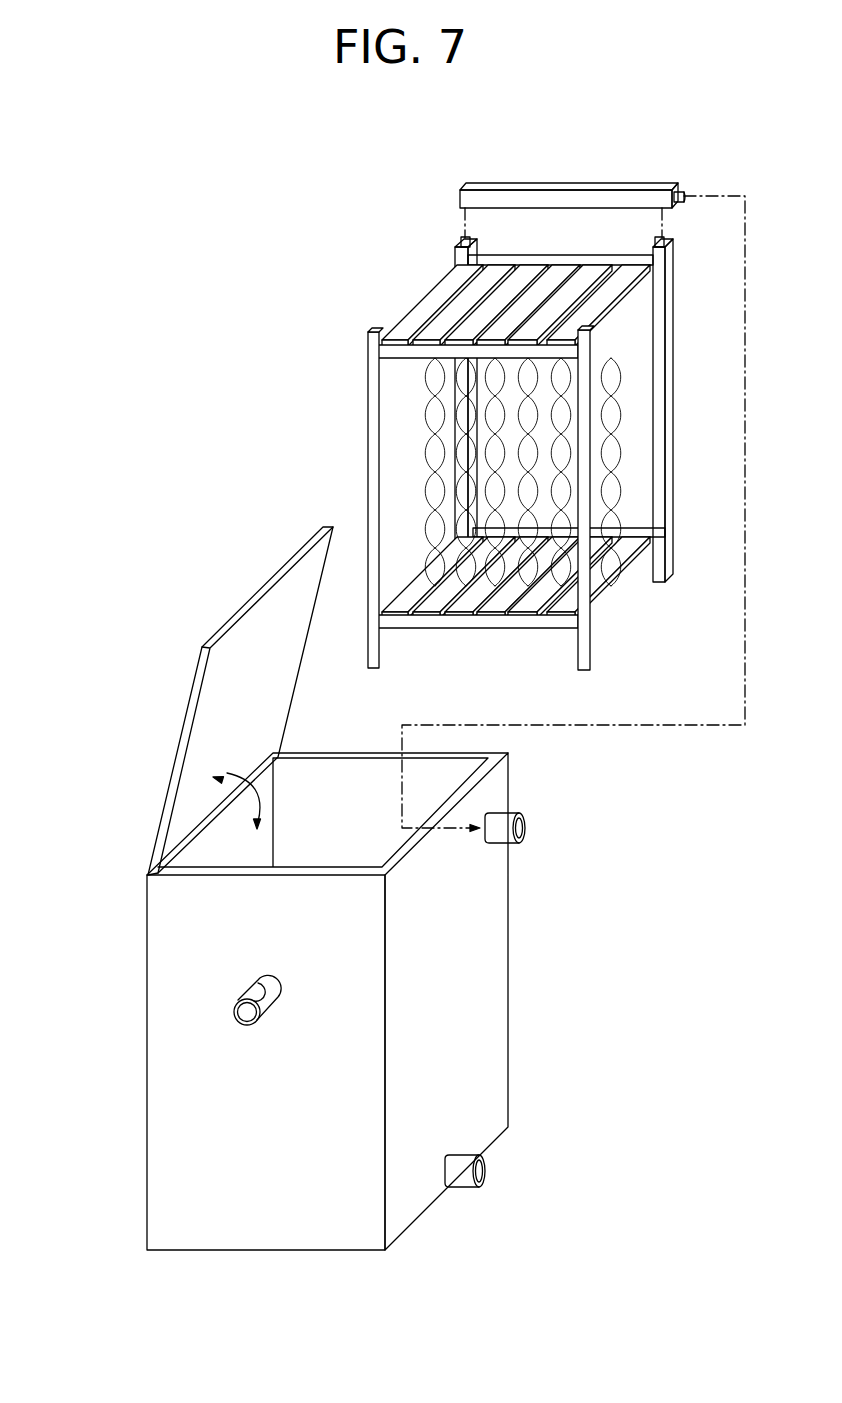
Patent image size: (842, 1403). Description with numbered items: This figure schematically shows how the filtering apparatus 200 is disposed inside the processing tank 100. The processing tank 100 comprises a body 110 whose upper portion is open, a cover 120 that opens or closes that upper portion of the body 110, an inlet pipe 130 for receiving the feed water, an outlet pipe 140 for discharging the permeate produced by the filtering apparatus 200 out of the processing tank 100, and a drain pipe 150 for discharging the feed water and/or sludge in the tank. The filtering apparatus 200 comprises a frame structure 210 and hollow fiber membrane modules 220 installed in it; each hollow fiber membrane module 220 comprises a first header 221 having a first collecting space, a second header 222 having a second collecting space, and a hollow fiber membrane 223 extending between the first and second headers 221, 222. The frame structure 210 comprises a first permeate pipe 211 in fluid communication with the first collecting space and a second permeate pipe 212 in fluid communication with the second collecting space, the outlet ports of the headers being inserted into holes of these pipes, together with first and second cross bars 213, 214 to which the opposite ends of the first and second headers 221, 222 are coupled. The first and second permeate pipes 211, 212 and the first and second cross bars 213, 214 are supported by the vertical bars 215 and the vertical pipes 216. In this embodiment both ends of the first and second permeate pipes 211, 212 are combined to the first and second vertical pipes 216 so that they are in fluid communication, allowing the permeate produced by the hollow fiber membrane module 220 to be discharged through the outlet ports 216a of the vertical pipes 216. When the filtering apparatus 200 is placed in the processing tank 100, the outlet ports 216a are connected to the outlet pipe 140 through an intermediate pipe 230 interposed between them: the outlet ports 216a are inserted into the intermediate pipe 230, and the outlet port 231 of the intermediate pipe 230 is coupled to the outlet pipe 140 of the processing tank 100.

The processing tank 100 is at (305, 889).
The body 110 is at (162, 943).
The cover 120 is at (182, 762).
The inlet pipe 130 is at (250, 983).
The outlet pipe 140 is at (500, 822).
The drain pipe 150 is at (460, 1172).
The filtering apparatus 200 is at (519, 432).
The frame structure 210 is at (564, 402).
The first permeate pipe 211 is at (570, 258).
The second permeate pipe 212 is at (645, 543).
The first cross bar 213 is at (378, 355).
The second cross bar 214 is at (432, 623).
The vertical bar 215 is at (373, 483).
The vertical pipe 216 is at (455, 258).
The outlet port 216a is at (468, 240).
The hollow fiber membrane module 220 is at (516, 298).
The first header 221 is at (430, 337).
The second header 222 is at (503, 612).
The hollow fiber membrane 223 is at (423, 437).
The intermediate pipe 230 is at (580, 175).
The outlet port 231 is at (673, 193).